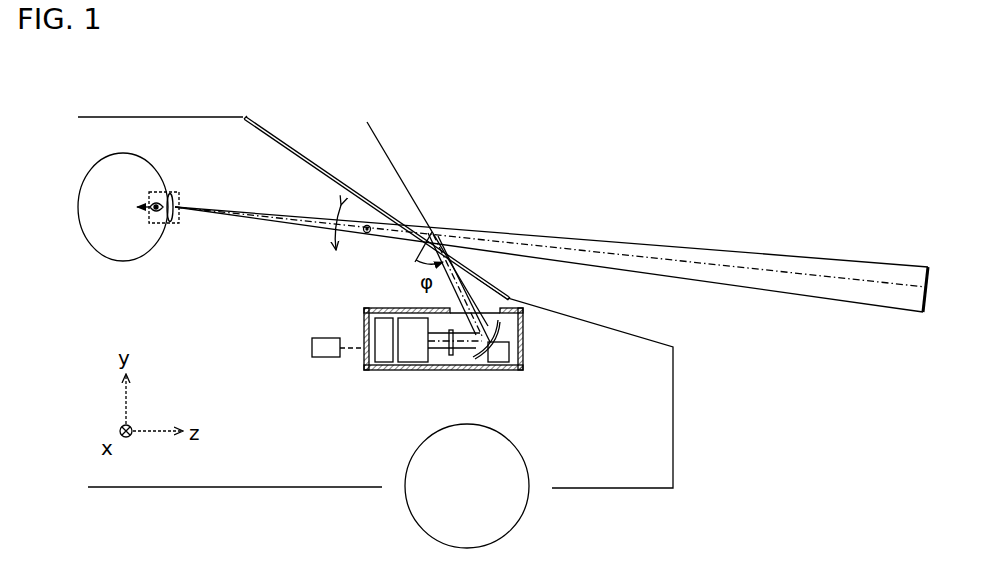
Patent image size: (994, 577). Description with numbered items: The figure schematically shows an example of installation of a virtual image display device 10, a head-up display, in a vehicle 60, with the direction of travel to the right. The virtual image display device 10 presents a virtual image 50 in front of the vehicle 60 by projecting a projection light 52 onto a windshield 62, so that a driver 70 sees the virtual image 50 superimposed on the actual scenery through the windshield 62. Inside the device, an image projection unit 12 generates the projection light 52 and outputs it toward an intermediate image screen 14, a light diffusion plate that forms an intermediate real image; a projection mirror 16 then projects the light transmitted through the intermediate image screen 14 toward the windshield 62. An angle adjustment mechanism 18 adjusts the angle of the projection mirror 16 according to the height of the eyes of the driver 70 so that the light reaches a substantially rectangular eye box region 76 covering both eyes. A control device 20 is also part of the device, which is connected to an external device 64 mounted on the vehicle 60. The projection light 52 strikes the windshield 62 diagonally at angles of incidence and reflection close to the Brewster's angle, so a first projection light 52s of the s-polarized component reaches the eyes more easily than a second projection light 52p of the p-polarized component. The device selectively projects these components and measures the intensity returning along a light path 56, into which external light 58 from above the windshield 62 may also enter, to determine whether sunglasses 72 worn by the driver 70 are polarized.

The virtual image display device 10 is at (337, 310).
The image projection unit 12 is at (412, 363).
The intermediate image screen 14 is at (451, 356).
The projection mirror 16 is at (503, 325).
The angle adjustment mechanism 18 is at (503, 363).
The control device 20 is at (384, 363).
The virtual image 50 is at (928, 251).
The projection light 52 is at (322, 218).
The second projection light 52p is at (332, 243).
The first projection light 52s is at (367, 235).
The light path 56 is at (477, 269).
The external light 58 is at (395, 178).
The vehicle 60 is at (155, 101).
The windshield 62 is at (297, 137).
The external device 64 is at (312, 348).
The driver 70 is at (78, 172).
The sunglasses 72 is at (172, 191).
The eye box region 76 is at (169, 224).